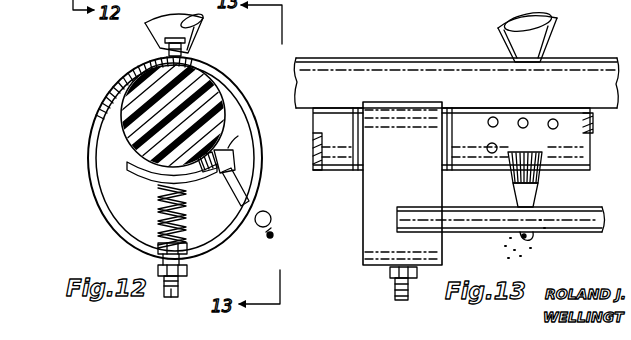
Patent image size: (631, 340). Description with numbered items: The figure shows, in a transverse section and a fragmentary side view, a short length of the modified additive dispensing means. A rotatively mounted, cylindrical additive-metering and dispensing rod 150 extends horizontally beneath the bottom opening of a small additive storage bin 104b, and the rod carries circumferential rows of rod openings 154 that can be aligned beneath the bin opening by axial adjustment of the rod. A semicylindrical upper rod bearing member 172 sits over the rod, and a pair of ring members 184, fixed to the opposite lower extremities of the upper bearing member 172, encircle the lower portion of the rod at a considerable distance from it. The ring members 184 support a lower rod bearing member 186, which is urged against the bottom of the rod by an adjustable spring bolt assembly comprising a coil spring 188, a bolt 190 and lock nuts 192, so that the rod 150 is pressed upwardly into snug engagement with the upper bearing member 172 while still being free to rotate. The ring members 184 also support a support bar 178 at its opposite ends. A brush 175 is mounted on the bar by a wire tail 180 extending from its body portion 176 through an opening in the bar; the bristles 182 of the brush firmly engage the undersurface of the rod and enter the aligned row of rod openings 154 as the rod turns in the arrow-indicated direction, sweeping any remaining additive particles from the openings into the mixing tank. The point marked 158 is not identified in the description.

In FIG. 12, the small additive storage bin 104b is at (201, 30).
In FIG. 13, the small additive storage bin 104b is at (553, 32).
In FIG. 12, the additive-metering and dispensing rod 150 is at (137, 128).
In FIG. 13, the rod openings 154 is at (537, 138).
In FIG. 12, the disk edge contact 158 is at (233, 142).
In FIG. 12, the upper rod bearing member 172 is at (125, 76).
In FIG. 13, the upper rod bearing member 172 is at (529, 91).
In FIG. 12, the brush 175 is at (240, 182).
In FIG. 13, the brush 175 is at (511, 192).
In FIG. 12, the body portion 176 is at (245, 193).
In FIG. 13, the body portion 176 is at (538, 197).
In FIG. 12, the support bar 178 is at (271, 218).
In FIG. 13, the support bar 178 is at (590, 233).
In FIG. 12, the wire tail 180 is at (273, 235).
In FIG. 13, the wire tail 180 is at (536, 242).
In FIG. 12, the bristles 182 is at (222, 170).
In FIG. 13, the bristles 182 is at (543, 150).
In FIG. 12, the ring member 184 is at (86, 157).
In FIG. 13, the ring member 184 is at (362, 247).
In FIG. 12, the lower rod bearing member 186 is at (140, 178).
In FIG. 12, the coil spring 188 is at (161, 210).
In FIG. 12, the bolt 190 is at (179, 283).
In FIG. 12, the lock nuts 192 is at (186, 256).